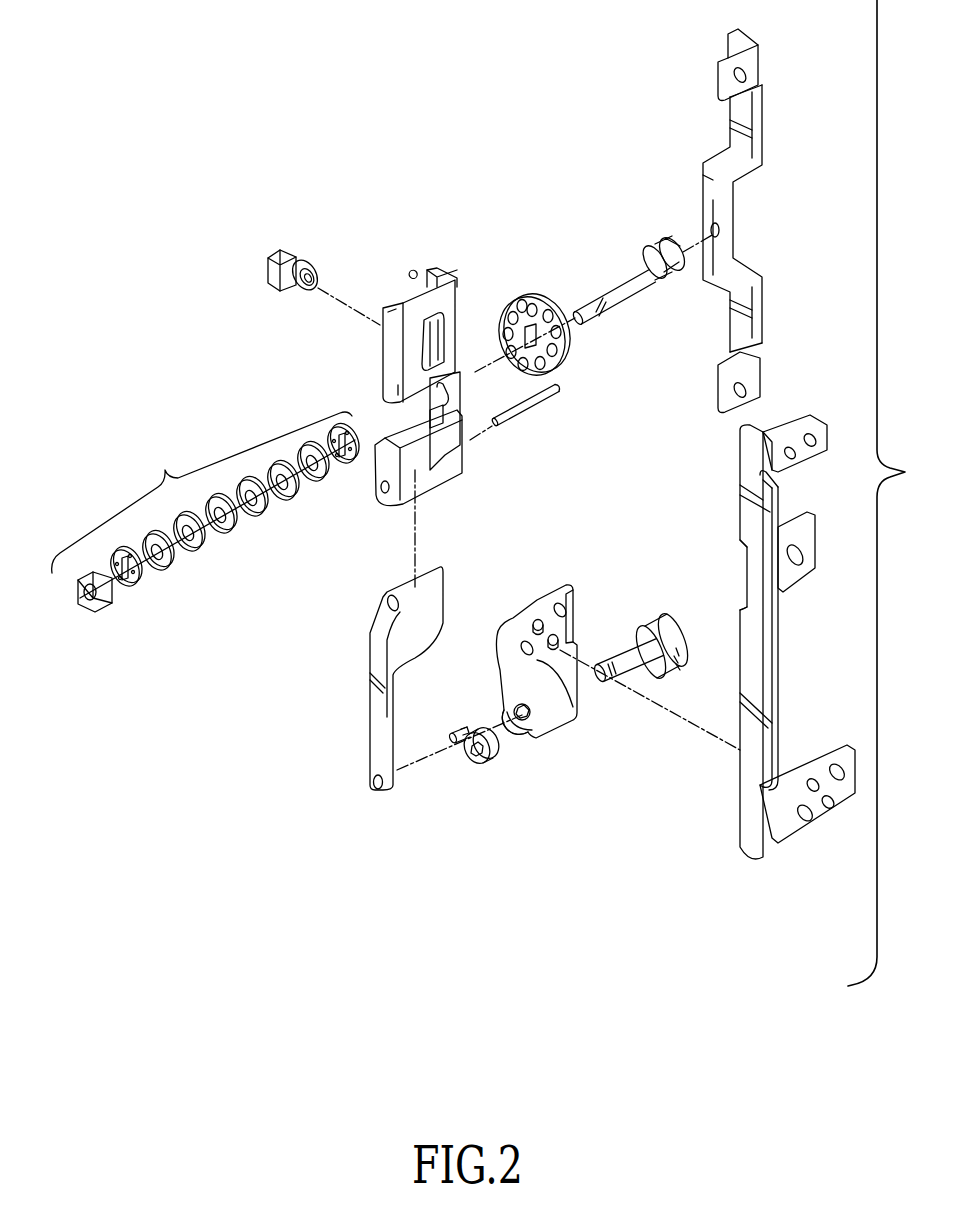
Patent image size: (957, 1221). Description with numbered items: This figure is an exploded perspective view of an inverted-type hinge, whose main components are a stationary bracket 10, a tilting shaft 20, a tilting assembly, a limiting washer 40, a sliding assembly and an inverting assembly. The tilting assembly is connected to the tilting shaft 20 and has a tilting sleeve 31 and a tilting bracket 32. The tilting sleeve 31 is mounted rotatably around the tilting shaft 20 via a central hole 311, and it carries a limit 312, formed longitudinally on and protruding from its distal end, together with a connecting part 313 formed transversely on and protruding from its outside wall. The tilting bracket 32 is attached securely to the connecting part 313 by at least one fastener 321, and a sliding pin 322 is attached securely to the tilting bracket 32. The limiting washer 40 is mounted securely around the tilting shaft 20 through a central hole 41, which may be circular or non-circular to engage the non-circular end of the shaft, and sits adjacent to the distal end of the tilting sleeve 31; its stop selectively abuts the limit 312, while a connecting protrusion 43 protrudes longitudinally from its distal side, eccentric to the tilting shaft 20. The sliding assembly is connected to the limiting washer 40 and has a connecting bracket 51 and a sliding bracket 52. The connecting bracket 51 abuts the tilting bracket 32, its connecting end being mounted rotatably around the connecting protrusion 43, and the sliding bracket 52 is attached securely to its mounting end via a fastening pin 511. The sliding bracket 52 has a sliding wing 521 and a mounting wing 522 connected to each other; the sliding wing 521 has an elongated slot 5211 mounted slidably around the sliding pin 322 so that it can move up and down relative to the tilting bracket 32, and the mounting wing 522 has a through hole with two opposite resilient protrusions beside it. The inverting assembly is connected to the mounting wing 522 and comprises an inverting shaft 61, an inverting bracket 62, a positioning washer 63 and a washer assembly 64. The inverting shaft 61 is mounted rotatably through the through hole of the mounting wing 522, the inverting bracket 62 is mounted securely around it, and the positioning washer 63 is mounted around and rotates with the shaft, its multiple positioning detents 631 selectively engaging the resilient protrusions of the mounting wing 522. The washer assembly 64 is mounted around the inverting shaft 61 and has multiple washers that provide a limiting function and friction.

The stationary bracket 10 is at (667, 680).
The tilting shaft 20 is at (632, 653).
The tilting sleeve 31 is at (568, 671).
The central hole 311 is at (523, 727).
The limit 312 is at (513, 708).
The connecting part 313 is at (553, 590).
The tilting bracket 32 is at (767, 675).
The fastener 321 is at (563, 645).
The sliding pin 322 is at (293, 260).
The limiting washer 40 is at (467, 759).
The central hole 41 is at (462, 760).
The connecting protrusion 43 is at (458, 733).
The connecting bracket 51 is at (375, 703).
The fastening pin 511 is at (528, 412).
The sliding bracket 52 is at (374, 394).
The sliding wing 521 is at (374, 302).
The elongated slot 5211 is at (423, 342).
The mounting wing 522 is at (438, 268).
The inverting shaft 61 is at (624, 275).
The inverting bracket 62 is at (752, 122).
The positioning washer 63 is at (565, 323).
The positioning detents 631 is at (558, 345).
The washer assembly 64 is at (208, 512).